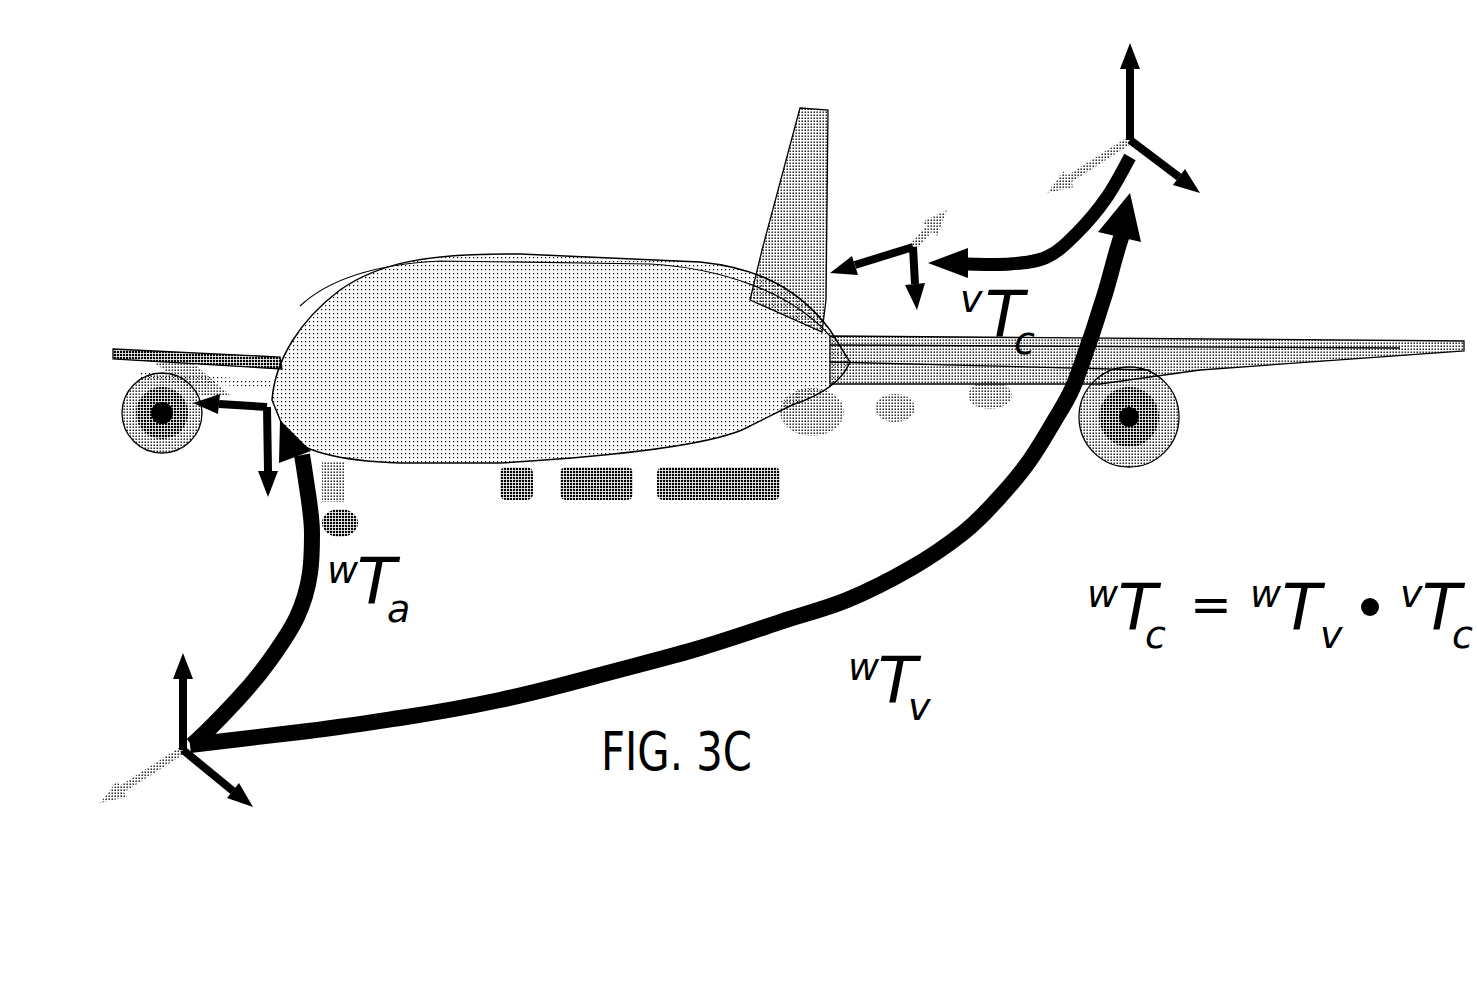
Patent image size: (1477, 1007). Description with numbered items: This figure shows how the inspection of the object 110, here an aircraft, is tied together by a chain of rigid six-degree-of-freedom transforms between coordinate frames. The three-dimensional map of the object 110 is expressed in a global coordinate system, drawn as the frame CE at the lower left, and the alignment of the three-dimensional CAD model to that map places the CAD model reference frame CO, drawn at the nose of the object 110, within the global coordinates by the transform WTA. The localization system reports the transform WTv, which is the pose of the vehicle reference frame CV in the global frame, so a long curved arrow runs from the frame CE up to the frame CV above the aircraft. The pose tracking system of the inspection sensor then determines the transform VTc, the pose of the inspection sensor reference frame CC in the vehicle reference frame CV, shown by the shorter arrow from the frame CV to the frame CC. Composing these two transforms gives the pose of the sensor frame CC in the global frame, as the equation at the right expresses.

The object 110 is at (820, 163).
The vehicle reference frame CV is at (1123, 118).
The inspection sensor reference frame CC is at (888, 251).
The 3D CAD model reference frame CO is at (222, 452).
The global coordinate system CE is at (176, 730).